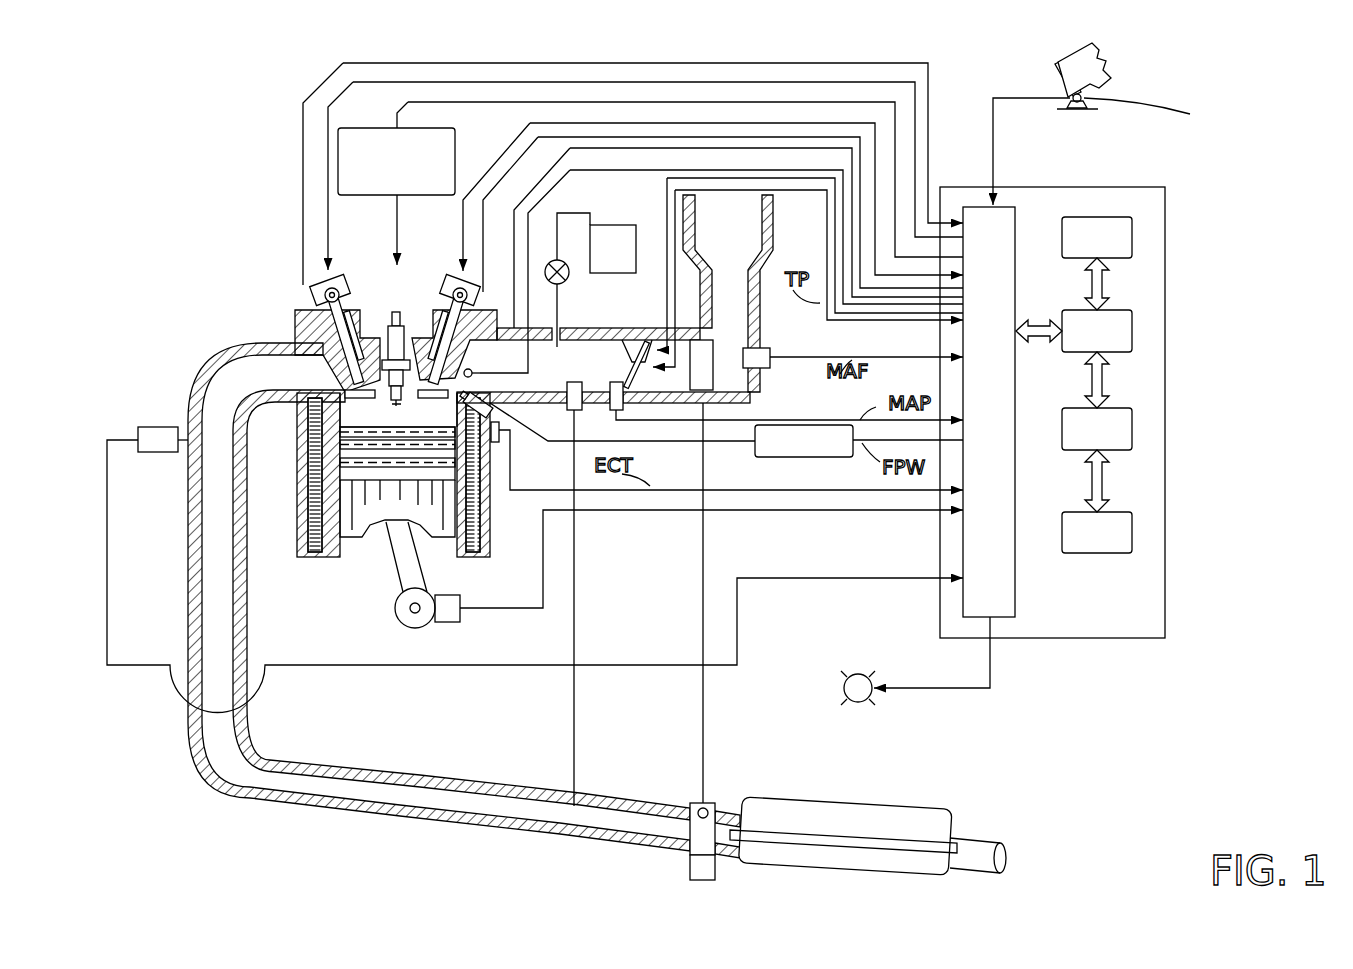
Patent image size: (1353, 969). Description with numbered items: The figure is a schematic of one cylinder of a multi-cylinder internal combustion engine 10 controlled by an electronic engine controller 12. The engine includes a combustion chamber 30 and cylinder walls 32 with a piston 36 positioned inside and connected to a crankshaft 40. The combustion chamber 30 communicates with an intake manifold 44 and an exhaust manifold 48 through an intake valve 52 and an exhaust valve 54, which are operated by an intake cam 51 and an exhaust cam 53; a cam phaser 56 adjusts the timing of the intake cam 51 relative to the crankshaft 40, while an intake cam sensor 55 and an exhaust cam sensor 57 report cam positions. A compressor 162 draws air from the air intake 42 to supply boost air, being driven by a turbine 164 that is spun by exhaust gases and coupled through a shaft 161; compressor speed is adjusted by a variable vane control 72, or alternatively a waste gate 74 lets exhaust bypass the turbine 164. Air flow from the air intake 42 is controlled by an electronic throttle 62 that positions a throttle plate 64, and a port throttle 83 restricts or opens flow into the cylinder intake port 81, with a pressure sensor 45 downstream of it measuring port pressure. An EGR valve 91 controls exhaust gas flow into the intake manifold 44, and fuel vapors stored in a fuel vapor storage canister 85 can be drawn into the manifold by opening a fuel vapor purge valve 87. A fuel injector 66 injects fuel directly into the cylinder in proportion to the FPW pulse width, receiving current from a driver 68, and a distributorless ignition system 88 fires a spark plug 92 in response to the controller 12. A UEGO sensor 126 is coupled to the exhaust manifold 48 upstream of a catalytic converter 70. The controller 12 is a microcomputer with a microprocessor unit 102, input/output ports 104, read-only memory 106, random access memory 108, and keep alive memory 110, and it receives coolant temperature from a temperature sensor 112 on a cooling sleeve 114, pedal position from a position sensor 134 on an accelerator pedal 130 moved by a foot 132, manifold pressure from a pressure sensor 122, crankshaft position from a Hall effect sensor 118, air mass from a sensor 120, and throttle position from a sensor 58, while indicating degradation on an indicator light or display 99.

The internal combustion engine 10 is at (230, 266).
The electronic engine controller 12 is at (1099, 394).
The combustion chamber 30 is at (393, 408).
The cylinder walls 32 is at (623, 505).
The piston 36 is at (380, 510).
The crankshaft 40 is at (403, 622).
The air intake 42 is at (741, 247).
The intake manifold 44 is at (611, 376).
The pressure sensor 45 is at (472, 318).
The exhaust manifold 48 is at (281, 382).
The intake cam 51 is at (457, 261).
The intake valve 52 is at (412, 336).
The exhaust cam 53 is at (336, 280).
The exhaust valve 54 is at (355, 376).
The intake cam sensor 55 is at (478, 292).
The cam phaser 56 is at (440, 286).
The exhaust cam sensor 57 is at (316, 288).
The throttle position sensor 58 is at (654, 368).
The electronic throttle 62 is at (626, 340).
The throttle plate 64 is at (643, 342).
The fuel injector 66 is at (500, 420).
The driver 68 is at (855, 456).
The catalytic converter 70 is at (780, 872).
The variable vane control 72 is at (716, 806).
The waste gate 74 is at (690, 862).
The cylinder intake port 81 is at (446, 386).
The port throttle 83 is at (476, 368).
The fuel vapor storage canister 85 is at (626, 260).
The fuel vapor purge valve 87 is at (566, 266).
The distributorless ignition system 88 is at (350, 128).
The EGR valve 91 is at (566, 406).
The spark plug 92 is at (390, 320).
The indicator light or display 99 is at (860, 674).
The microprocessor unit 102 is at (1132, 333).
The input/output ports 104 is at (1018, 216).
The read-only memory 106 is at (1132, 240).
The random access memory 108 is at (1132, 432).
The keep alive memory 110 is at (1132, 535).
The temperature sensor 112 is at (499, 442).
The cooling sleeve 114 is at (490, 522).
The Hall effect sensor 118 is at (450, 622).
The air mass sensor 120 is at (770, 352).
The pressure sensor 122 is at (615, 410).
The Universal Exhaust Gas Oxygen (UEGO) sensor 126 is at (140, 430).
The accelerator pedal 130 is at (1062, 76).
The foot 132 is at (1110, 62).
The position sensor 134 is at (1157, 115).
The shaft 161 is at (740, 408).
The compressor 162 is at (713, 340).
The turbine 164 is at (690, 806).